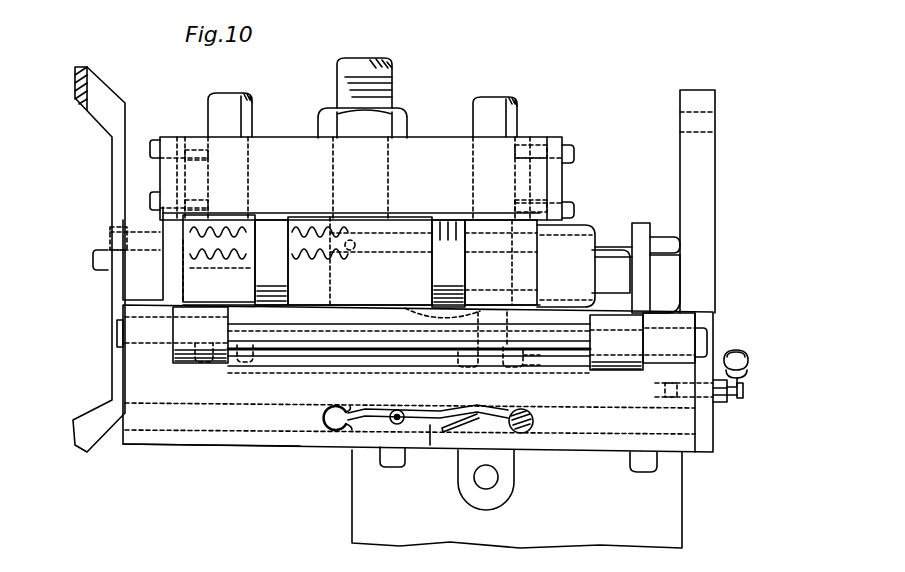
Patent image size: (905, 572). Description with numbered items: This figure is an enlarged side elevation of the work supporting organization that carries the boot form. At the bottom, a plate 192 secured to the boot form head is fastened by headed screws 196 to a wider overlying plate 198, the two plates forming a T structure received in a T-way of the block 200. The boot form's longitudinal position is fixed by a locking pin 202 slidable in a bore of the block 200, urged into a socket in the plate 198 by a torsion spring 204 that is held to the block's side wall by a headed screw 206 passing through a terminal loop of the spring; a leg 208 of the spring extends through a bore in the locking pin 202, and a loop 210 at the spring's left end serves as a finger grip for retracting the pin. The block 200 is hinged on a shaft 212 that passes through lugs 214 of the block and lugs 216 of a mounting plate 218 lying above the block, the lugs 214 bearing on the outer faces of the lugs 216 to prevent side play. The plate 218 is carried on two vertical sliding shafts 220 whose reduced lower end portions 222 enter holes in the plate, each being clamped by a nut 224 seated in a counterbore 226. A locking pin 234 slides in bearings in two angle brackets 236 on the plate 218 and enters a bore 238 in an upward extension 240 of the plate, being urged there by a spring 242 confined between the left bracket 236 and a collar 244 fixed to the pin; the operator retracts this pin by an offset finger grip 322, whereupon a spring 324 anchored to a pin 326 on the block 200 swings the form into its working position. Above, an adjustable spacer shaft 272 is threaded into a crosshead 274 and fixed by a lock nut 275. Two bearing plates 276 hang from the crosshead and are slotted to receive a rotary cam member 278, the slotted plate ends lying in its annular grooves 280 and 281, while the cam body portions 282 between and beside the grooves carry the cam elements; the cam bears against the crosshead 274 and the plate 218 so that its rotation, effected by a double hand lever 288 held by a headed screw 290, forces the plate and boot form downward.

The plate 192 is at (357, 462).
The headed screws 196 is at (392, 461).
The overlying plate 198 is at (245, 433).
The block 200 is at (190, 444).
The locking pin 202 is at (392, 421).
The torsion spring 204 is at (475, 410).
The headed screw 206 is at (535, 421).
The leg 208 is at (430, 423).
The loop 210 is at (334, 405).
The hinge pin or shaft 212 is at (395, 346).
The lugs 214 is at (133, 310).
The lugs 216 is at (187, 333).
The mounting plate 218 is at (288, 346).
The vertical sliding shafts 220 is at (250, 103).
The reduced lower end portions 222 is at (361, 301).
The clamping nut 224 is at (245, 363).
The counterbore 226 is at (525, 366).
The locking pin 234 is at (672, 246).
The angle brackets 236 is at (641, 226).
The bore 238 is at (708, 130).
The upward extension 240 is at (708, 172).
The spring 242 is at (323, 229).
The collar 244 is at (347, 265).
The vertical shaft 272 is at (380, 70).
The crosshead 274 is at (442, 147).
The lock nut 275 is at (350, 123).
The bearing plates 276 is at (168, 172).
The rotary cam member 278 is at (398, 229).
The annular groove 280 is at (155, 291).
The annular groove 281 is at (540, 283).
The bushing 282 is at (282, 272).
The double hand lever 288 is at (112, 172).
The headed screw 290 is at (100, 252).
The offset finger grip 322 is at (110, 228).
The spring 324 is at (739, 354).
The pin 326 is at (744, 394).